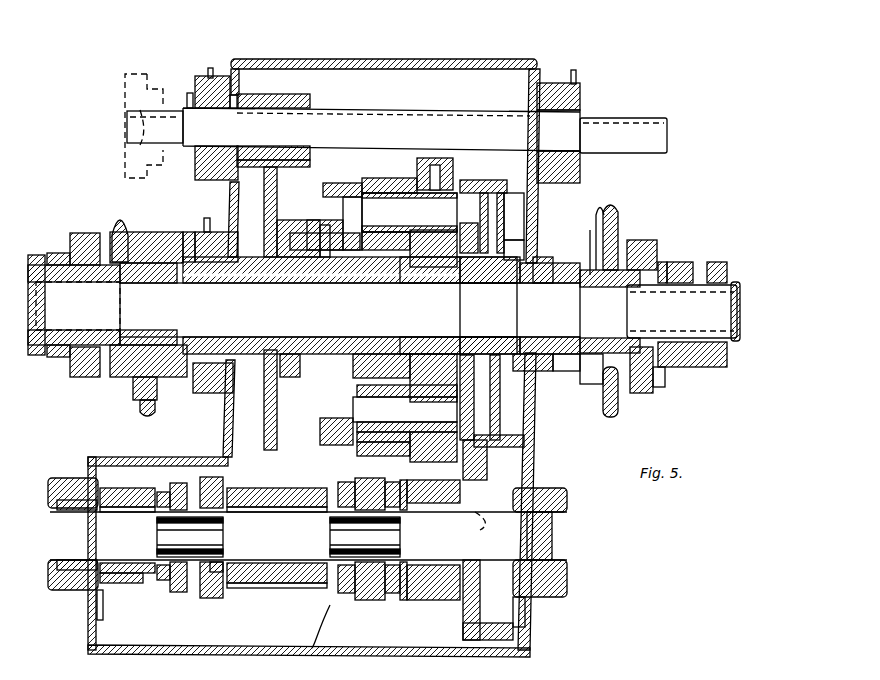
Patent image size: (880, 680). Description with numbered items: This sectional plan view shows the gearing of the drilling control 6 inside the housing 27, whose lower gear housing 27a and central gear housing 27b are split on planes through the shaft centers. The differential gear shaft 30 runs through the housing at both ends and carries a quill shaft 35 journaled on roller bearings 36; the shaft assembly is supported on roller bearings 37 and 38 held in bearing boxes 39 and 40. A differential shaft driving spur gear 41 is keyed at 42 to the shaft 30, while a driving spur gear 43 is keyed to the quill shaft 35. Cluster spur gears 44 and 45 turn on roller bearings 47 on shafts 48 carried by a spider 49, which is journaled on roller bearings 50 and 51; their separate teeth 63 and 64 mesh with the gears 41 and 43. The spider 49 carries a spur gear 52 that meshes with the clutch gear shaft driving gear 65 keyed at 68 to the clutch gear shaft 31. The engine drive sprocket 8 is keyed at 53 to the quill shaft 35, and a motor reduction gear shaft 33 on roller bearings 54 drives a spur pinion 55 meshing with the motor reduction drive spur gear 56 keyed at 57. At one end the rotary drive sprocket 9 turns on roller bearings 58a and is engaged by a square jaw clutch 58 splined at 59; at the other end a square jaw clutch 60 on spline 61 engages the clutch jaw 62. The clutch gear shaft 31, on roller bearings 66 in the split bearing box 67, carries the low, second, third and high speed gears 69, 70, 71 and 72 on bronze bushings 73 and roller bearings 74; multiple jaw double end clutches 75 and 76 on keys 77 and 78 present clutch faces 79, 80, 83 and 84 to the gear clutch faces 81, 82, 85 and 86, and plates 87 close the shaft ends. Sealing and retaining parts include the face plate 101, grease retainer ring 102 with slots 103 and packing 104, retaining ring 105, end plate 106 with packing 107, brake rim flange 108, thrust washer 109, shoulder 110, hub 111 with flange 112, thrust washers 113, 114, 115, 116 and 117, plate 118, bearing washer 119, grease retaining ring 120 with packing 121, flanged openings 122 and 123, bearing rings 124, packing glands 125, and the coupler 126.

The drilling control 6 is at (532, 431).
The engine drive sprocket 8 is at (140, 400).
The rotary drive sprocket 9 is at (619, 217).
The housing 27 is at (150, 656).
The lower gear housing 27a is at (212, 657).
The central gear housing 27b is at (598, 212).
The differential gear shaft 30 is at (706, 290).
The clutch gear shaft 31 is at (108, 530).
The motor reduction gear shaft 33 is at (440, 113).
The quill shaft 35 is at (222, 425).
The roller bearings 36 is at (178, 330).
The roller bearing 37 is at (540, 362).
The roller bearing 38 is at (206, 392).
The bearing box 39 is at (560, 372).
The bearing box 40 is at (200, 407).
The differential shaft driving spur gear 41 is at (436, 340).
The key 42 is at (420, 286).
The driving spur gear 43 is at (370, 356).
The cluster spur gear 44 is at (420, 158).
The cluster spur gear 45 is at (412, 390).
The roller bearings 47 is at (382, 228).
The shafts 48 is at (364, 195).
The spider 49 is at (560, 160).
The roller bearings 50 is at (326, 250).
The roller bearings 51 is at (512, 228).
The spur gear 52 is at (540, 140).
The key 53 is at (116, 238).
The roller bearings 54 is at (214, 68).
The spur pinion 55 is at (278, 100).
The motor reduction drive spur gear 56 is at (298, 158).
The key 57 is at (262, 228).
The square jaw clutch 58 is at (688, 368).
The roller bearings 58a is at (632, 395).
The spline keys 59 is at (660, 285).
The square jaw clutch 60 is at (76, 350).
The spline 61 is at (92, 312).
The clutch jaw 62 is at (128, 367).
The spur gear teeth 63 is at (450, 152).
The spur gear teeth 64 is at (378, 176).
The clutch gear shaft driving gear 65 is at (522, 448).
The roller bearings 66 is at (74, 568).
The split bearing box 67 is at (80, 605).
The key 68 is at (482, 522).
The low speed gear 69 is at (121, 584).
The second speed gear 70 is at (256, 592).
The third speed gear 71 is at (301, 590).
The high speed gear 72 is at (438, 602).
The bronze bushings 73 is at (137, 508).
The roller bearings 74 is at (440, 504).
The multiple jaw double end clutch 75 is at (174, 592).
The multiple jaw double end clutch 76 is at (362, 604).
The key 77 is at (205, 551).
The key 78 is at (375, 548).
The clutch face 79 is at (165, 580).
The clutch face 80 is at (211, 600).
The clutch face 81 is at (148, 575).
The clutch face 82 is at (226, 592).
The clutch face 83 is at (346, 596).
The clutch face 84 is at (392, 600).
The gear clutch face 85 is at (313, 642).
The gear clutch face 86 is at (414, 601).
The plates 87 is at (50, 516).
The face plate 101 is at (741, 300).
The grease retainer ring 102 is at (638, 344).
The slots 103 is at (642, 298).
The packing 104 is at (648, 390).
The retaining ring 105 is at (605, 210).
The end plate 106 is at (527, 284).
The packing 107 is at (553, 355).
The annular brake rim flange 108 is at (556, 255).
The thrust washer 109 is at (604, 412).
The shoulder 110 is at (462, 332).
The hub 111 is at (506, 338).
The annular retaining flange 112 is at (506, 284).
The thrust washer 113 is at (545, 225).
The thrust washer 114 is at (380, 300).
The thrust washers 115 is at (505, 145).
The thrust washers 116 is at (345, 215).
The thrust washer 117 is at (232, 266).
The plate 118 is at (205, 218).
The bearing washer 119 is at (190, 232).
The grease retaining ring 120 is at (134, 300).
The packing 121 is at (130, 322).
The flanged opening 122 is at (528, 106).
The flanged opening 123 is at (243, 88).
The bearing rings 124 is at (205, 77).
The packing glands 125 is at (188, 100).
The coupler 126 is at (125, 89).